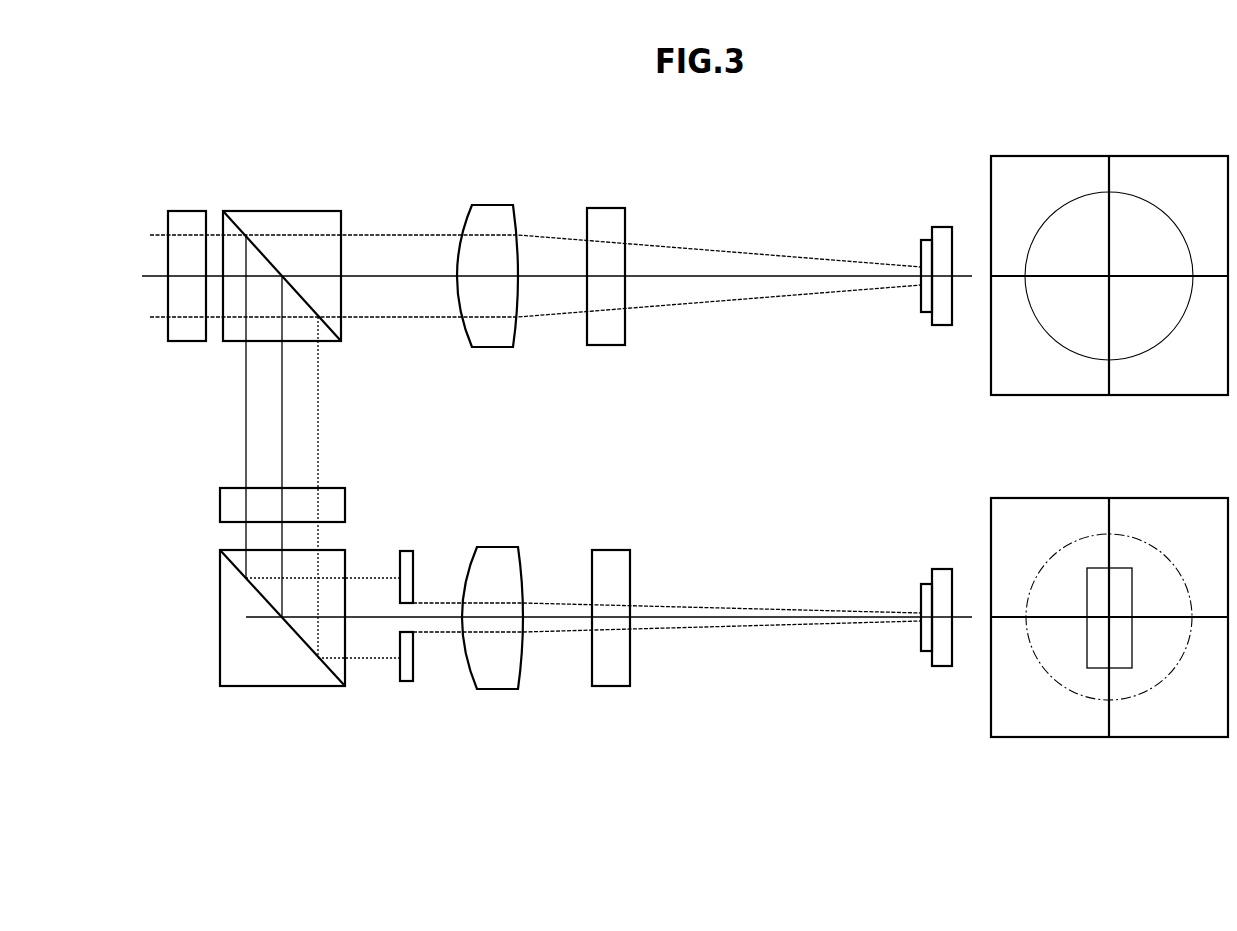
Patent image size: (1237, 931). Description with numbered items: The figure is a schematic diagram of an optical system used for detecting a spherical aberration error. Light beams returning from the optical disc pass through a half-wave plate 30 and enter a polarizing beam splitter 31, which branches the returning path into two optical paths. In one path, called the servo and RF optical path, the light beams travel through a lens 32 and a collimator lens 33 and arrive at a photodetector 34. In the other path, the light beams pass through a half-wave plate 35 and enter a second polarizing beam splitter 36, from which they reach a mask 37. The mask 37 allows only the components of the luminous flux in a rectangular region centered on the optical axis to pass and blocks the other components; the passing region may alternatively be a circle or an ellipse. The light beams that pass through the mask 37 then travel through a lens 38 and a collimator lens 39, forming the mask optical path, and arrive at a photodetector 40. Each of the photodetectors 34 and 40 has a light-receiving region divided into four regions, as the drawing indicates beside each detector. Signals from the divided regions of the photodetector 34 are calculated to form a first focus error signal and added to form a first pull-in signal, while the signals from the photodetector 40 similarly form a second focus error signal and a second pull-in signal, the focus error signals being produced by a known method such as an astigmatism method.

The λ/2 plate 30 is at (190, 210).
The polarizing beam splitter 31 is at (287, 210).
The lens 32 is at (492, 205).
The collimator lens 33 is at (610, 208).
The photodetector 34 is at (947, 227).
The λ/2 plate 35 is at (219, 512).
The polarizing beam splitter 36 is at (219, 620).
The mask 37 is at (410, 550).
The lens 38 is at (494, 546).
The collimator lens 39 is at (611, 550).
The photodetector 40 is at (949, 569).